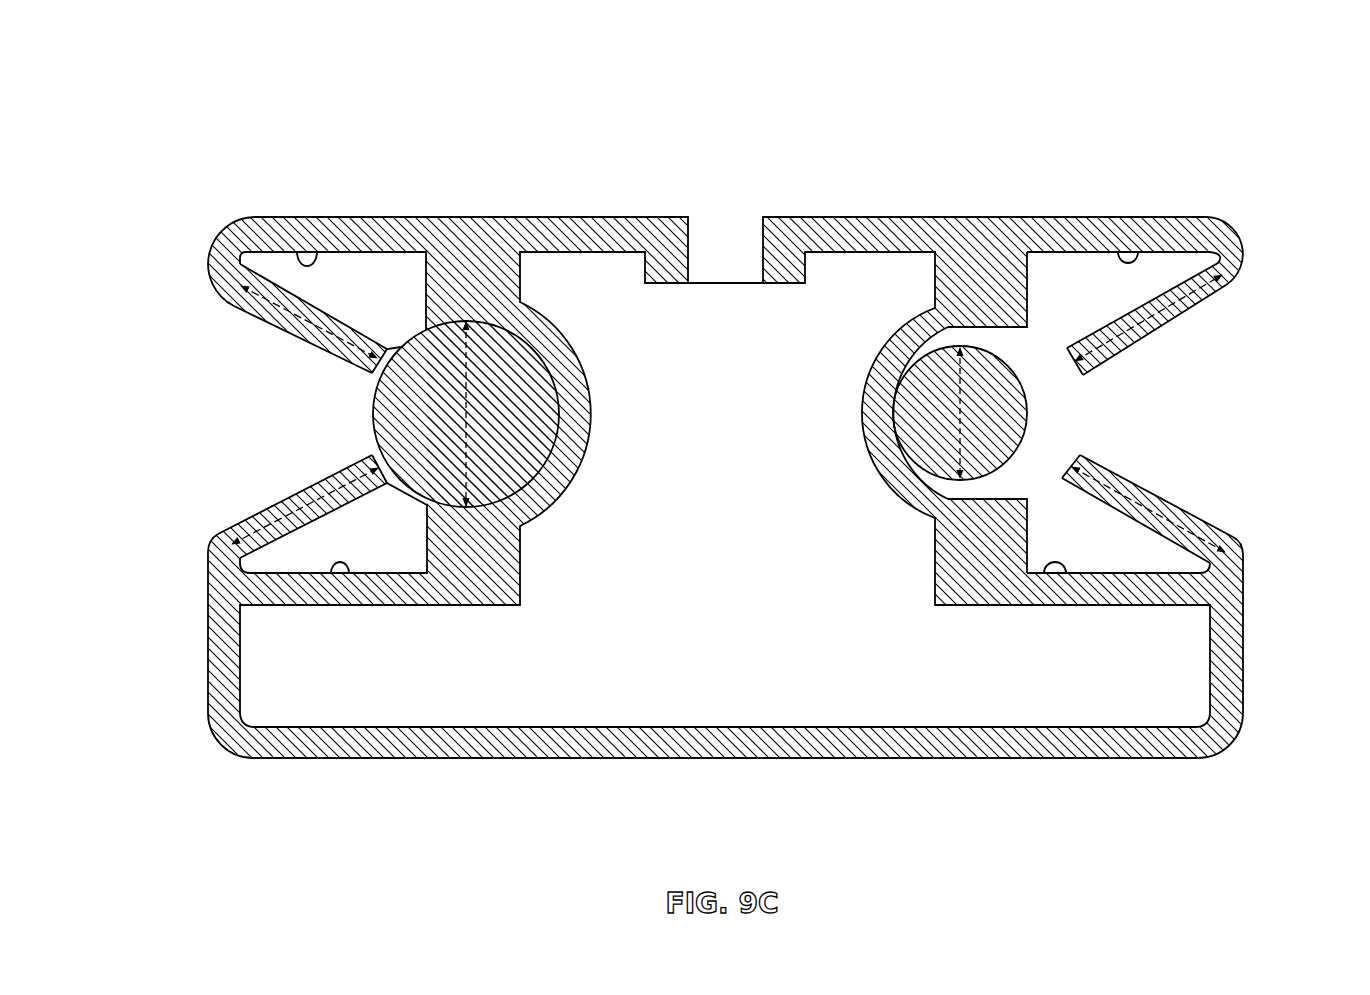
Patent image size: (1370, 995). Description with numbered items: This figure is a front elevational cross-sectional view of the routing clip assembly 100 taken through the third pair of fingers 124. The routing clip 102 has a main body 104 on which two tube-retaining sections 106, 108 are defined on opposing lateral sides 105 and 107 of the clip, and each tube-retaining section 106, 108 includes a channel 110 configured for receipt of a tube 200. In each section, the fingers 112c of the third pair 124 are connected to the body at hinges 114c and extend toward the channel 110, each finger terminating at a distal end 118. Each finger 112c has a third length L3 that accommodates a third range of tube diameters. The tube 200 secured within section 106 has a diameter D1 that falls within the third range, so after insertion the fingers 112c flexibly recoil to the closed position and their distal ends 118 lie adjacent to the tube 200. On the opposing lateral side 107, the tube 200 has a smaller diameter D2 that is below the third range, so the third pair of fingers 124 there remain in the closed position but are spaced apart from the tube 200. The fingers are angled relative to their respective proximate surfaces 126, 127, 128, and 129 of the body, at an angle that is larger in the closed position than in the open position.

The routing clip assembly 100 is at (1240, 128).
The routing clip 102 is at (832, 243).
The main body 104 is at (882, 243).
The lateral side 105 is at (207, 688).
The tube-retaining section 106 is at (165, 384).
The lateral side 107 is at (1243, 665).
The tube-retaining section 108 is at (1258, 413).
The channel 110 is at (1018, 355).
The fingers 112c is at (290, 343).
The hinges 114c is at (211, 271).
The distal ends 118 is at (403, 345).
The third pair of fingers 124 is at (287, 330).
The proximate surface 126 is at (313, 262).
The proximate surface 127 is at (337, 568).
The proximate surface 128 is at (1134, 262).
The proximate surface 129 is at (1060, 567).
The tube 200 is at (410, 426).
The diameter D1 is at (470, 398).
The diameter D2 is at (955, 442).
The third length L3 is at (1175, 541).